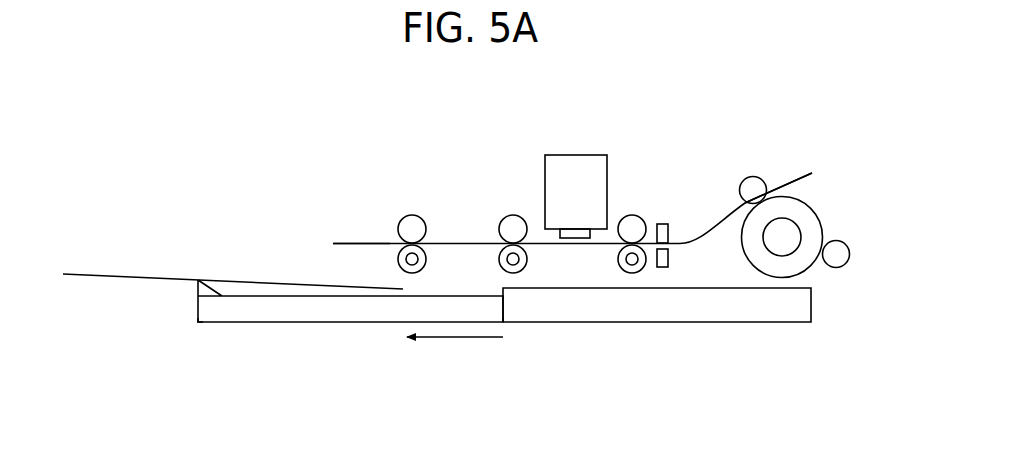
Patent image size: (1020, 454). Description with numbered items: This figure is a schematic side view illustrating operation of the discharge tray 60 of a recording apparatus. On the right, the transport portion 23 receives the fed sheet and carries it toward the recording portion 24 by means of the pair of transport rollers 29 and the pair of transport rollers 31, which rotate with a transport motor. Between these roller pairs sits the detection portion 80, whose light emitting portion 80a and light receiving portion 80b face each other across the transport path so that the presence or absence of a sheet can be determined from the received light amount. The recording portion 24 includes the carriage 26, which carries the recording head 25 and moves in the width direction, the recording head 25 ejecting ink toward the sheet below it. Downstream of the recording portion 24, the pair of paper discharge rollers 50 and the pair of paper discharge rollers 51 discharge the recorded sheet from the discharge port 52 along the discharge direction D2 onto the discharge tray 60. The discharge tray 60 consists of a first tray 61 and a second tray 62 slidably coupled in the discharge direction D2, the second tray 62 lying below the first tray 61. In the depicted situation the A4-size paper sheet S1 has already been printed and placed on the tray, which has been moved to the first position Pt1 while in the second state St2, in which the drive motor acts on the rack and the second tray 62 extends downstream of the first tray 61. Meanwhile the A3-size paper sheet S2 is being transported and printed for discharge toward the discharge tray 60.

The transport portion 23 is at (815, 152).
The recording portion 24 is at (589, 162).
The recording head 25 is at (560, 237).
The carriage 26 is at (580, 153).
The pair of transport rollers 29 is at (810, 208).
The pair of transport rollers 31 is at (633, 210).
The pair of paper discharge rollers 50 is at (498, 210).
The pair of paper discharge rollers 51 is at (392, 208).
The discharge port 52 is at (380, 236).
The discharge tray 60 is at (512, 341).
The first tray 61 is at (713, 316).
The second tray 62 is at (312, 316).
The detection portion 80 is at (703, 198).
The light emitting portion 80a is at (662, 222).
The light receiving portion 80b is at (663, 268).
The A4-size paper sheet S1 is at (107, 279).
The A3-size paper sheet S2 is at (447, 242).
The first position Pt1 is at (197, 333).
The second state St2 is at (513, 333).
The discharge direction D2 is at (460, 340).